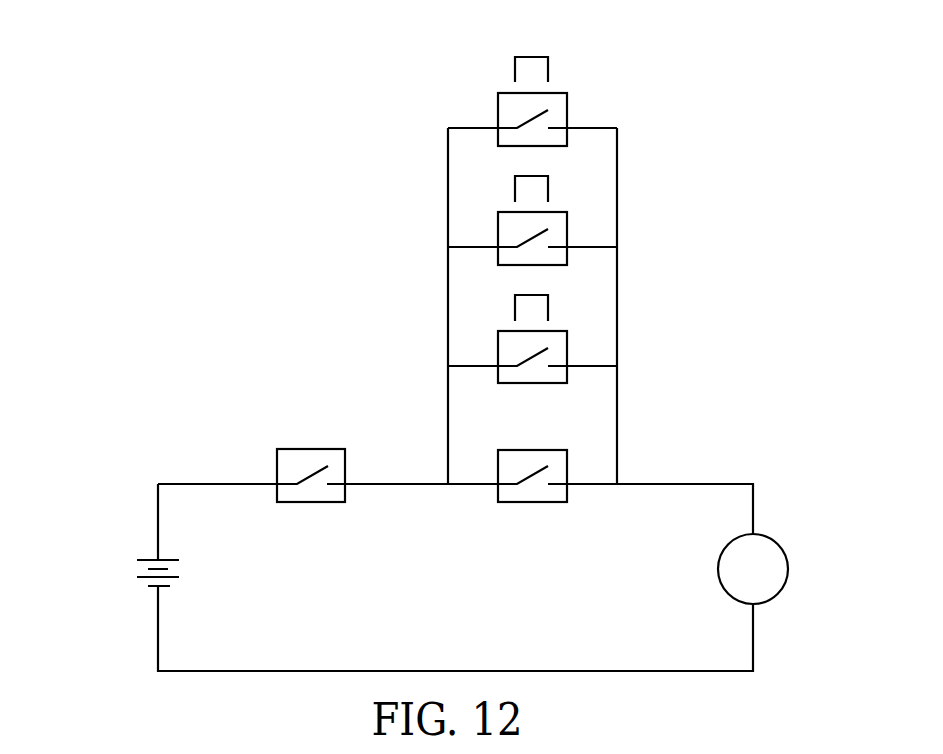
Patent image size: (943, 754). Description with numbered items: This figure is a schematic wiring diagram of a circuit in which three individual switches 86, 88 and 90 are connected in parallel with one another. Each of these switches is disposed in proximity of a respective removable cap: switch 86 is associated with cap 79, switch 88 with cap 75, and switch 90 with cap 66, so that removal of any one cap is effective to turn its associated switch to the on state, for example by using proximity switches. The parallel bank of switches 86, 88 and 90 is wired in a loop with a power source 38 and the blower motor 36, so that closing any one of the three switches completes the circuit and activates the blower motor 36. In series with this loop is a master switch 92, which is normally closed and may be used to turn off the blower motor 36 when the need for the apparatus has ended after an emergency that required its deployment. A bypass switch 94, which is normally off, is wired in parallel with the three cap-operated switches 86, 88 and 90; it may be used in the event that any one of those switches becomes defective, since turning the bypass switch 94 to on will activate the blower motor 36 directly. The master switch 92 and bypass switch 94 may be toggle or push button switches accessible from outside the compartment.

The blower motor 36 is at (771, 556).
The battery 38 is at (141, 573).
The cap 66 is at (527, 57).
The cap 75 is at (525, 175).
The cap 79 is at (525, 294).
The switch 86 is at (567, 340).
The switch 88 is at (567, 222).
The switch 90 is at (567, 108).
The master switch 92 is at (313, 449).
The bypass switch 94 is at (533, 502).